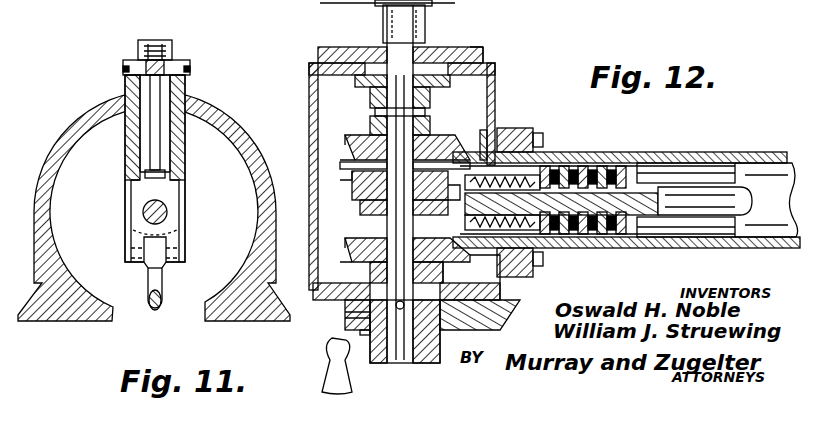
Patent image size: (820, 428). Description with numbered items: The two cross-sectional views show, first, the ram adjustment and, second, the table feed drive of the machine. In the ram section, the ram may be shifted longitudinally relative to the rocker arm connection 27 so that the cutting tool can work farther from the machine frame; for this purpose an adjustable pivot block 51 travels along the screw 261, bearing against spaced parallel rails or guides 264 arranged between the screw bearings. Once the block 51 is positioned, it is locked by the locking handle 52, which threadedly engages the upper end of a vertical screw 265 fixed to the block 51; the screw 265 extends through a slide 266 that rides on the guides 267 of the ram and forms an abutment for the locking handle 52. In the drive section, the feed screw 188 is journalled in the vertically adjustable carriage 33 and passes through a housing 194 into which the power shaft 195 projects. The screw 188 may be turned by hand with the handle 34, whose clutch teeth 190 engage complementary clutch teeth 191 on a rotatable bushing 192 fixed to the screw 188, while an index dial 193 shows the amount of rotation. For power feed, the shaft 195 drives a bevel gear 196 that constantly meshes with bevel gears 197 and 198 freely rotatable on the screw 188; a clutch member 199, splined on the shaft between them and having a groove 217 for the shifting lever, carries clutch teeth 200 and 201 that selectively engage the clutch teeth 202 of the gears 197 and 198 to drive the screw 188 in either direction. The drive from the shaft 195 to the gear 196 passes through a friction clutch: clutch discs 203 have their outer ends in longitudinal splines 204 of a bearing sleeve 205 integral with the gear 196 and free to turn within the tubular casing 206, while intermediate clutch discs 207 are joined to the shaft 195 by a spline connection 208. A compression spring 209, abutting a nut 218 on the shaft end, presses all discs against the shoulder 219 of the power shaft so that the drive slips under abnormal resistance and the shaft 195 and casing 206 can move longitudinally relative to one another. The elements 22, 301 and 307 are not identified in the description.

In FIG. 11, the housing 22 is at (219, 107).
In FIG. 11, the rocker arm connection 27 is at (164, 289).
In FIG. 11, the adjustable pivot block 51 is at (186, 205).
In FIG. 11, the locking handle 52 is at (171, 46).
In FIG. 11, the screw 261 is at (168, 214).
In FIG. 11, the rails or guides 264 is at (128, 190).
In FIG. 11, the vertical screw 265 is at (167, 152).
In FIG. 11, the slide 266 is at (178, 66).
In FIG. 11, the guides 267 is at (126, 70).
In FIG. 12, the vertically adjustable carriage 33 is at (484, 54).
In FIG. 12, the handle 34 is at (332, 383).
In FIG. 12, the feed screw 188 is at (432, 62).
In FIG. 12, the clutch teeth 190 is at (368, 333).
In FIG. 12, the clutch teeth 191 is at (352, 327).
In FIG. 12, the rotatable bushing 192 is at (346, 318).
In FIG. 12, the index dial 193 is at (470, 306).
In FIG. 12, the housing 194 is at (496, 82).
In FIG. 12, the power shaft 195 is at (741, 206).
In FIG. 12, the bevel gear 196 is at (488, 138).
In FIG. 12, the bevel gear 197 is at (441, 136).
In FIG. 12, the bevel gear 198 is at (438, 260).
In FIG. 12, the clutch member 199 is at (355, 183).
In FIG. 12, the clutch teeth 200 is at (360, 165).
In FIG. 12, the clutch teeth 201 is at (370, 240).
In FIG. 12, the clutch teeth 202 is at (352, 154).
In FIG. 12, the clutch discs 203 is at (583, 166).
In FIG. 12, the longitudinal splines 204 is at (673, 168).
In FIG. 12, the bearing sleeve 205 is at (731, 154).
In FIG. 12, the tubular casing 206 is at (771, 153).
In FIG. 12, the clutch discs 207 is at (563, 166).
In FIG. 12, the spline connection 208 is at (566, 245).
In FIG. 12, the compression spring 209 is at (535, 262).
In FIG. 12, the groove 217 is at (360, 201).
In FIG. 12, the nut 218 is at (497, 291).
In FIG. 12, the shoulder 219 is at (632, 238).
In FIG. 12, the bracket 301 is at (368, 7).
In FIG. 12, the coupling 307 is at (426, 24).